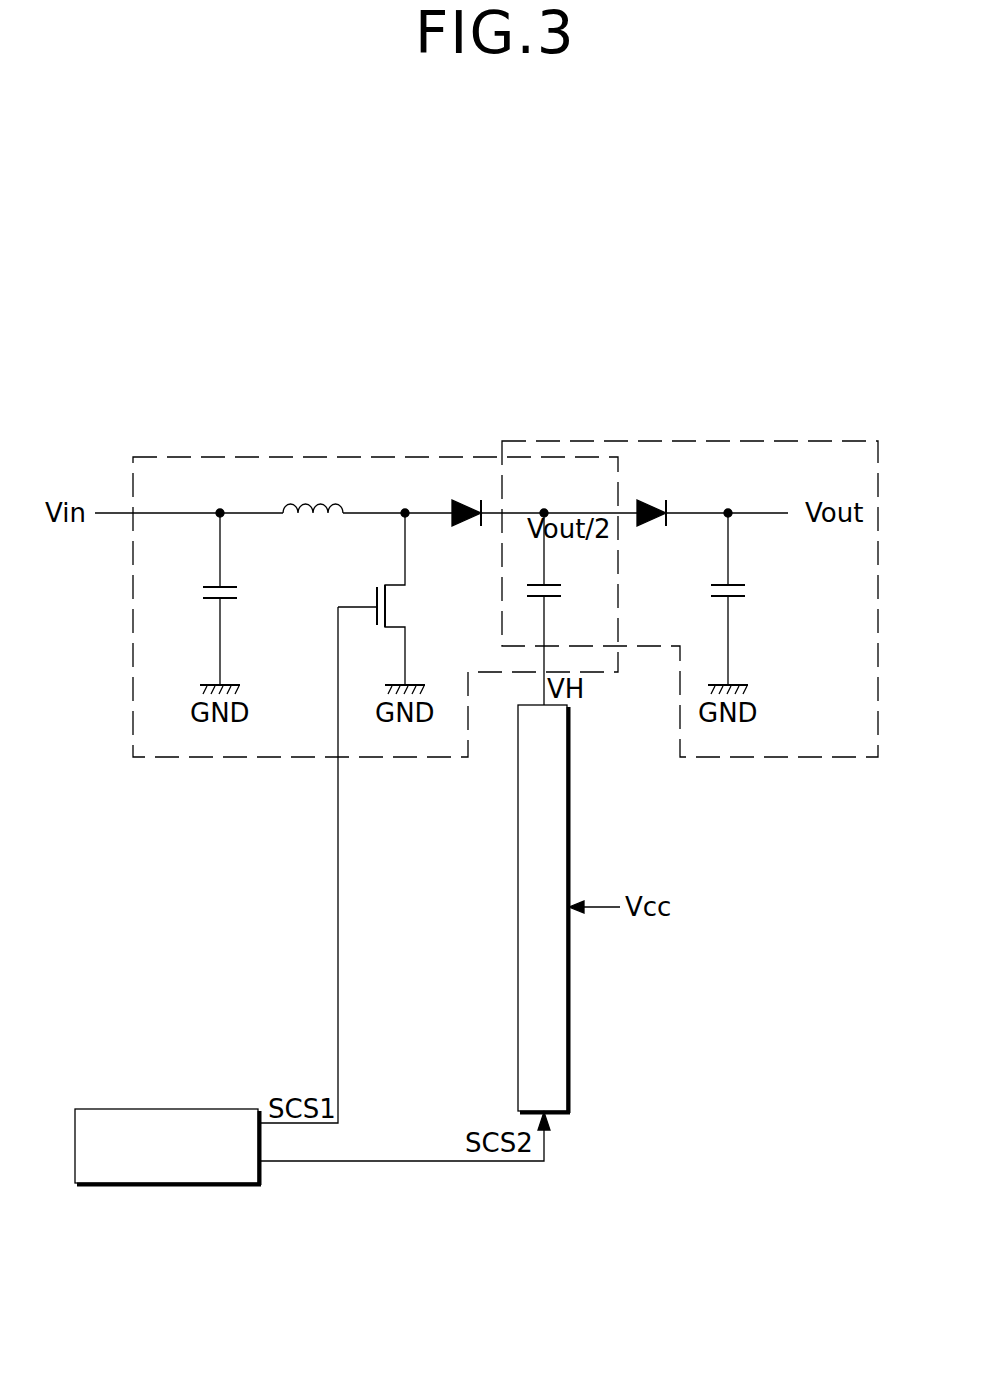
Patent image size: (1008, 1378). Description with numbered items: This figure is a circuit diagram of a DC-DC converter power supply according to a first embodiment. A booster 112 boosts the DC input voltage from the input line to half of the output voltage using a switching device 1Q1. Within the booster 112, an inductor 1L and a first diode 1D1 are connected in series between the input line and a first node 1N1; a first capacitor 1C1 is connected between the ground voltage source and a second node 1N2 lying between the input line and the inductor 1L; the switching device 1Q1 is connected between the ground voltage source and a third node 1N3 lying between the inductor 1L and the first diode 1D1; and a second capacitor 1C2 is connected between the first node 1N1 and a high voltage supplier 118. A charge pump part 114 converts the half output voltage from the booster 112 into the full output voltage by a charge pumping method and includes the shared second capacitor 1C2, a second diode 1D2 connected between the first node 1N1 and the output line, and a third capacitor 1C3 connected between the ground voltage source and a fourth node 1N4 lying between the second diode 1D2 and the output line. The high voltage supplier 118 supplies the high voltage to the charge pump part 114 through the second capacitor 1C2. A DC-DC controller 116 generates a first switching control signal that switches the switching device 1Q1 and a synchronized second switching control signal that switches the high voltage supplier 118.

The booster 112 is at (357, 438).
The charge pump part 114 is at (818, 441).
The DC-DC controller 116 is at (196, 1186).
The high voltage supplier 118 is at (570, 1083).
The first node 1N1 is at (544, 508).
The second node 1N2 is at (224, 508).
The third node 1N3 is at (407, 508).
The fourth node 1N4 is at (728, 508).
The inductor 1L is at (313, 490).
The first diode 1D1 is at (469, 496).
The second diode 1D2 is at (651, 496).
The first capacitor 1C1 is at (251, 599).
The second capacitor 1C2 is at (571, 609).
The third capacitor 1C3 is at (758, 599).
The switching device 1Q1 is at (395, 599).